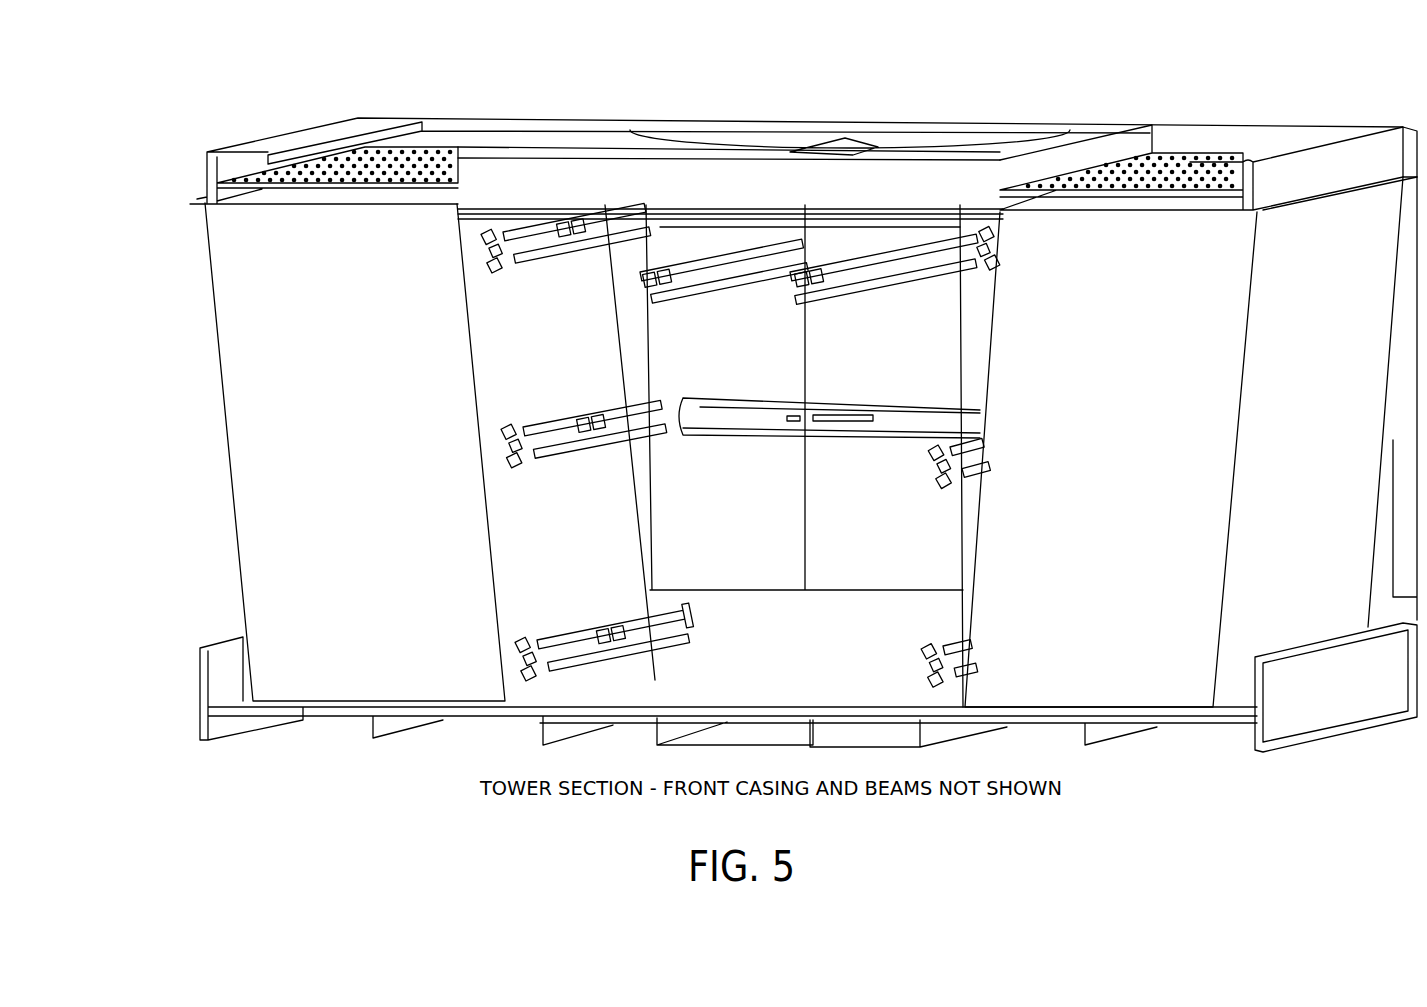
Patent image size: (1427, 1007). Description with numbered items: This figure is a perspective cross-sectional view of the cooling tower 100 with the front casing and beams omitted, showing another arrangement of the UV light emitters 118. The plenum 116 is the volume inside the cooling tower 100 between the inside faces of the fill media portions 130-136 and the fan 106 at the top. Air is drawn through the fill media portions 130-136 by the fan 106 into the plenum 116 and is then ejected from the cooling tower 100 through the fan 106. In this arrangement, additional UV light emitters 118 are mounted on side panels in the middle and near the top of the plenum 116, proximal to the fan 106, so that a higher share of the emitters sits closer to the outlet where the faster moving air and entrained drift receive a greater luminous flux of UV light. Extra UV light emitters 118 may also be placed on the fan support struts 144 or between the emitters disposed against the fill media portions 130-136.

The cooling tower 100 is at (1122, 83).
The fan 106 is at (833, 122).
The plenum 116 is at (713, 527).
The UV light emitters 118 is at (619, 357).
The fill media portions 130-136 is at (228, 443).
The fan support struts 144 is at (894, 296).